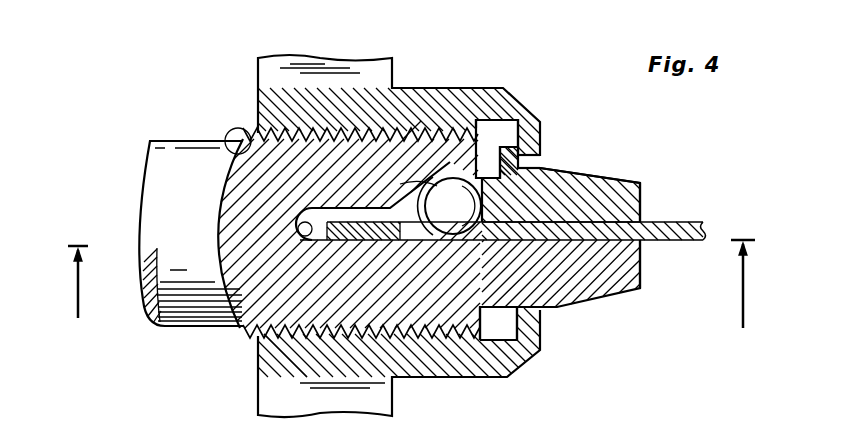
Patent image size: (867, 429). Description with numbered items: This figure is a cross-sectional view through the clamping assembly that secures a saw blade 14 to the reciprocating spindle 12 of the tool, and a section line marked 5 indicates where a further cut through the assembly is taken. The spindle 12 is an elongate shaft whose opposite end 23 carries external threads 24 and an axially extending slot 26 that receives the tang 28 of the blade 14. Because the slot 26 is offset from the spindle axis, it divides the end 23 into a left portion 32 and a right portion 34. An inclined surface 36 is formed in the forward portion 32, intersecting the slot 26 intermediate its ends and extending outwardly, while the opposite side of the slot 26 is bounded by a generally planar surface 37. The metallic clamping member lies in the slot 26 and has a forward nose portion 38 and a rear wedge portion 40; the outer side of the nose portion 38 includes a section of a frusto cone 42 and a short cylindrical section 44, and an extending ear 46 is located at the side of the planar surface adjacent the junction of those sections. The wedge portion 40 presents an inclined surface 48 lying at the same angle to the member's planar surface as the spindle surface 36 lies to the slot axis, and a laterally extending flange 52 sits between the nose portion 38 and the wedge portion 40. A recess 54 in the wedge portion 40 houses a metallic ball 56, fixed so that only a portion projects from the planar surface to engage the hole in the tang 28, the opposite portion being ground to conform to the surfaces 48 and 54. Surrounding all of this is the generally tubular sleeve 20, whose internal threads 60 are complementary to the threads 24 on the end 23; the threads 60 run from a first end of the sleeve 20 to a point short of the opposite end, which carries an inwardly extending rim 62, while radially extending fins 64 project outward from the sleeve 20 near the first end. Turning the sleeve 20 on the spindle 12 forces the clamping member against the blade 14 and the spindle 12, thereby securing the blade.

The spindle 12 is at (178, 138).
The blade 14 is at (682, 221).
The sleeve 20 is at (398, 220).
The opposite end of the spindle 23 is at (409, 149).
The external threads 24 is at (283, 345).
The axially extending slot 26 is at (306, 250).
The tang 28 is at (558, 243).
The left (forward) portion 32 is at (320, 147).
The right portion 34 is at (450, 317).
The inclined surface 36 is at (484, 176).
The planar surface 37 is at (515, 230).
The forward nose portion 38 is at (641, 200).
The rear wedge portion 40 is at (405, 240).
The section of a frusto cone 42 is at (618, 180).
The short cylindrical section 44 is at (538, 168).
The extending ear 46 is at (545, 263).
The inclined surface of wedge portion 48 is at (373, 222).
The laterally extending flange 52 is at (519, 153).
The recess 54 is at (423, 176).
The ball 56 is at (441, 235).
The internal threads 60 is at (226, 138).
The inwardly extending rim 62 is at (533, 328).
The radially extending fins 64 is at (380, 68).
The section line 5- 5 is at (411, 296).